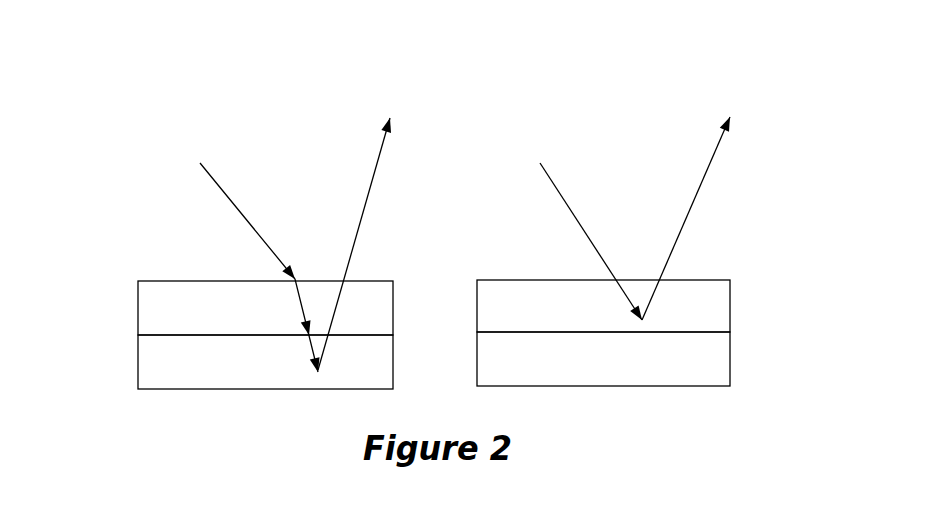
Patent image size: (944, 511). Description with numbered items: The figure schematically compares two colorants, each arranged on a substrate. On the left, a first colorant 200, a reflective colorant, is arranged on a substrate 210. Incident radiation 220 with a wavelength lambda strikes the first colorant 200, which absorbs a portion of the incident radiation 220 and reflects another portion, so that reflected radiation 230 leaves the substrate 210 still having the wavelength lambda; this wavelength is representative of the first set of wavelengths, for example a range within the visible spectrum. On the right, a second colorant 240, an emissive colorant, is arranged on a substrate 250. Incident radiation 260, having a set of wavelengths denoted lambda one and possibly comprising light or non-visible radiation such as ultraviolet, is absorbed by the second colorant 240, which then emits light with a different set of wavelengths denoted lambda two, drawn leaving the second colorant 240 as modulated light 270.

The first colorant 200 is at (139, 318).
The substrate 210 is at (139, 370).
The incident radiation 220 is at (212, 178).
The reflected radiation 230 is at (386, 142).
The second colorant 240 is at (730, 317).
The substrate 250 is at (730, 370).
The incident radiation 260 is at (542, 165).
The modulated light at wavelength lambda 2 270 is at (722, 133).